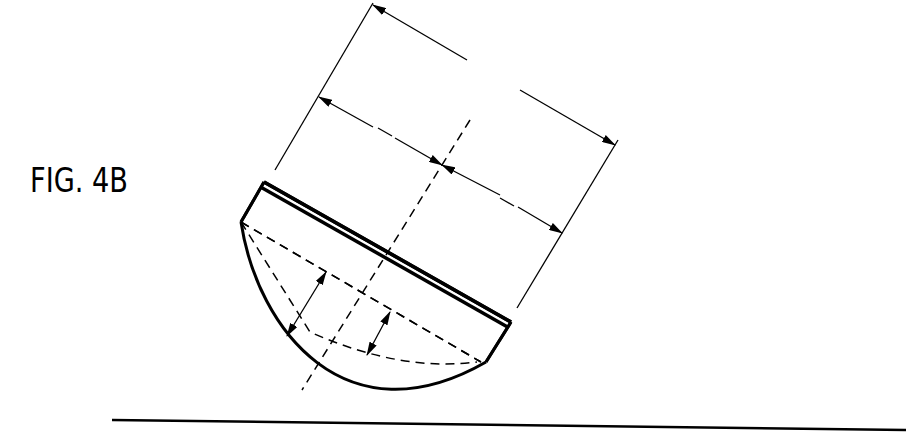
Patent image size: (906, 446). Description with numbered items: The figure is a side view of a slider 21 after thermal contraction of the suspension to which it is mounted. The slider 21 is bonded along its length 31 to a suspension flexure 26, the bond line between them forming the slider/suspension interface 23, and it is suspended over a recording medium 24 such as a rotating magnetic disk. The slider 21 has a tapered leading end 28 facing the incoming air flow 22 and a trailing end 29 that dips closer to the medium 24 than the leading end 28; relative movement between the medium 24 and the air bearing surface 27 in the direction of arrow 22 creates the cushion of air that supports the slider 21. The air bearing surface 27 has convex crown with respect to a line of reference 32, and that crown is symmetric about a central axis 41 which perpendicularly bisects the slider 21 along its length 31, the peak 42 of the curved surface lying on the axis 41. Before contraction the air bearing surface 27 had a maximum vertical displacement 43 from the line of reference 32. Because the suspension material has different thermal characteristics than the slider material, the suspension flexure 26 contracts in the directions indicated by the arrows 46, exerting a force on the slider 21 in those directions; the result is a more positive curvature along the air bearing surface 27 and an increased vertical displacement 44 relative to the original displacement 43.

The slider 21 is at (361, 292).
The incoming air flow 22 is at (168, 328).
The slider/suspension interface 23 is at (426, 271).
The recording medium 24 is at (122, 420).
The suspension flexure 26 is at (372, 232).
The air bearing surface 27 is at (259, 297).
The tapered leading end 28 is at (252, 203).
The trailing end 29 is at (488, 358).
The length 31 is at (446, 155).
The line of reference 32 is at (433, 336).
The central axis 41 is at (468, 122).
The peak 42 is at (283, 343).
The maximum vertical displacement 43 is at (389, 335).
The increased vertical displacement 44 is at (309, 304).
The arrows 46 is at (263, 181).